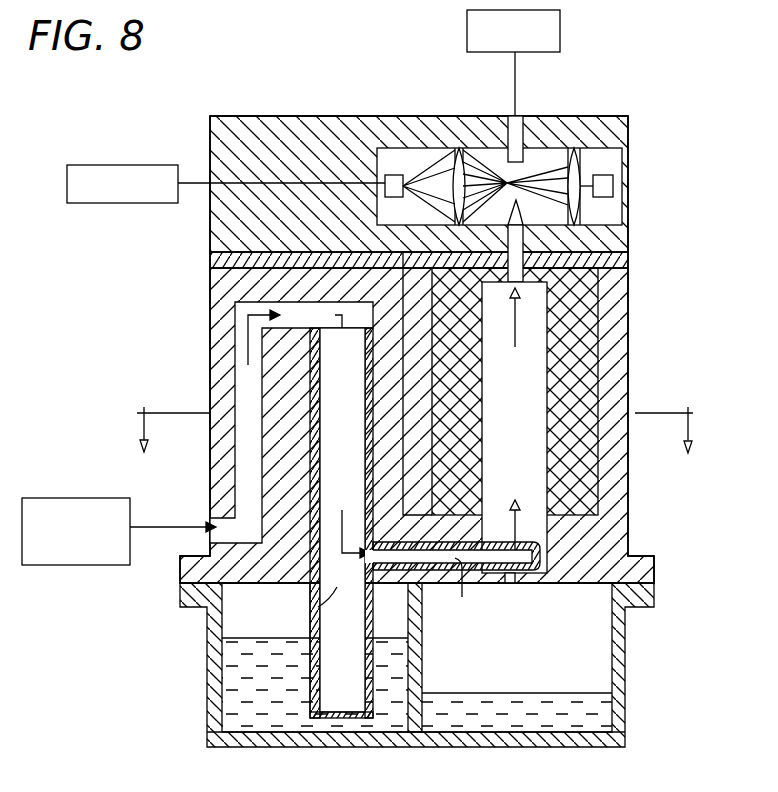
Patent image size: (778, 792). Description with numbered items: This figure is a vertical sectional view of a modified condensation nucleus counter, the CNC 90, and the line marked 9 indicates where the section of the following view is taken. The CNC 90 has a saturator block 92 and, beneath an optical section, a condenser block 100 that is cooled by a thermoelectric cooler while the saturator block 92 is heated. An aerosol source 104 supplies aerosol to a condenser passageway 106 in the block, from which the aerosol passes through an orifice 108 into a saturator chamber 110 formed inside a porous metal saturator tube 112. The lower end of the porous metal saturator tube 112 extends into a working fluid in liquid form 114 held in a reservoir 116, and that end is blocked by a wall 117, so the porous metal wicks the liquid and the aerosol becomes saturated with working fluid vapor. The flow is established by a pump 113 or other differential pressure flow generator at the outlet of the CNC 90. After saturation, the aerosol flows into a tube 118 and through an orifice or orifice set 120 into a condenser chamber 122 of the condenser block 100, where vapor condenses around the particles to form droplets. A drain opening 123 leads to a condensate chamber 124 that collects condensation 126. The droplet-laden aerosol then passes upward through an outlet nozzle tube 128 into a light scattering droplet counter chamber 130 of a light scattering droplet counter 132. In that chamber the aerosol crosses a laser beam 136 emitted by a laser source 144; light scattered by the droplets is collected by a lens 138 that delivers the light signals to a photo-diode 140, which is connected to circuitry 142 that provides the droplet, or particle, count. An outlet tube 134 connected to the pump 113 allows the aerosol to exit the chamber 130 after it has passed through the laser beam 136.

The section line 9- 9 is at (413, 427).
The CNC 90 is at (192, 255).
The saturator block 92 is at (218, 283).
The condenser block 100 is at (585, 315).
The aerosol source 104 is at (97, 567).
The condenser passageway 106 is at (245, 472).
The orifice 108 is at (315, 337).
The saturator chamber 110 is at (325, 490).
The porous metal saturator tube 112 is at (310, 612).
The pump 113 is at (560, 25).
The working fluid in liquid form 114 is at (237, 677).
The reservoir 116 is at (215, 722).
The wall 117 is at (316, 606).
The tube 118 is at (456, 594).
The orifice set 120 is at (522, 542).
The condenser chamber 122 is at (525, 372).
The drain opening 123 is at (512, 590).
The condensate chamber 124 is at (613, 665).
The condensation 126 is at (530, 700).
The outlet nozzle tube 128 is at (528, 213).
The light scattering droplet counter chamber 130 is at (600, 153).
The light scattering droplet counter 132 is at (593, 117).
The outlet tube 134 is at (518, 117).
The laser beam 136 is at (582, 167).
The lens 138 is at (455, 148).
The photo-diode 140 is at (397, 175).
The circuitry 142 is at (135, 165).
The laser source 144 is at (613, 186).